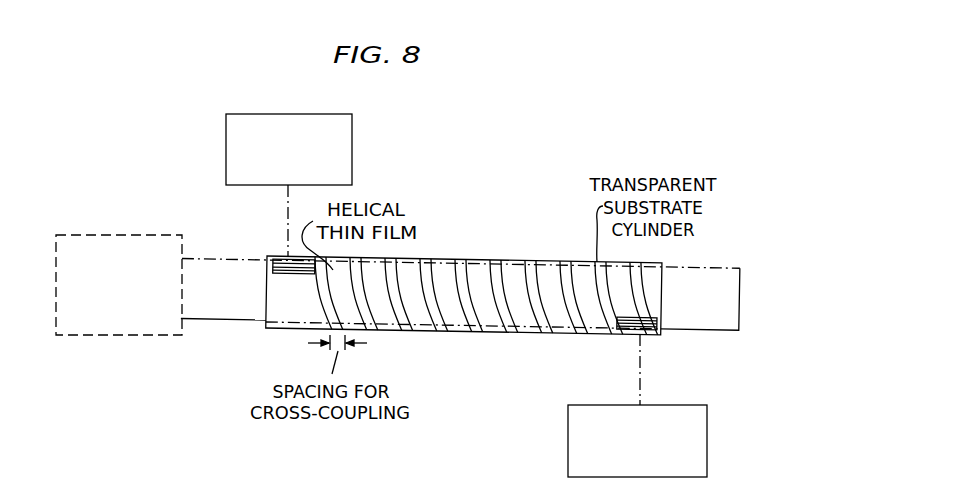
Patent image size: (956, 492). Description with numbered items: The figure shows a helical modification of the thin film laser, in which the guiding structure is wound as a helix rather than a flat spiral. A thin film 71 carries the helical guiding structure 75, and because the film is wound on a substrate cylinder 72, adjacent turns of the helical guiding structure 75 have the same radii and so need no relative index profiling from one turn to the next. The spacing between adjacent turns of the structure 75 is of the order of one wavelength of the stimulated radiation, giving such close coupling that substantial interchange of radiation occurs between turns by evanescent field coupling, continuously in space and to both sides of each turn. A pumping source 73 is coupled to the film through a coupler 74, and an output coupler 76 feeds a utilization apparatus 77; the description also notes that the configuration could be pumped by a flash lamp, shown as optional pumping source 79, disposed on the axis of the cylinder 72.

The thin film 71 is at (267, 306).
The substrate cylinder 72 is at (657, 280).
The pumping source 73 is at (352, 162).
The input coupler 74 is at (268, 282).
The helical guiding structure 75 is at (297, 307).
The output coupler 76 is at (658, 313).
The utilization apparatus 77 is at (707, 446).
The optional pumping source 79 is at (56, 290).